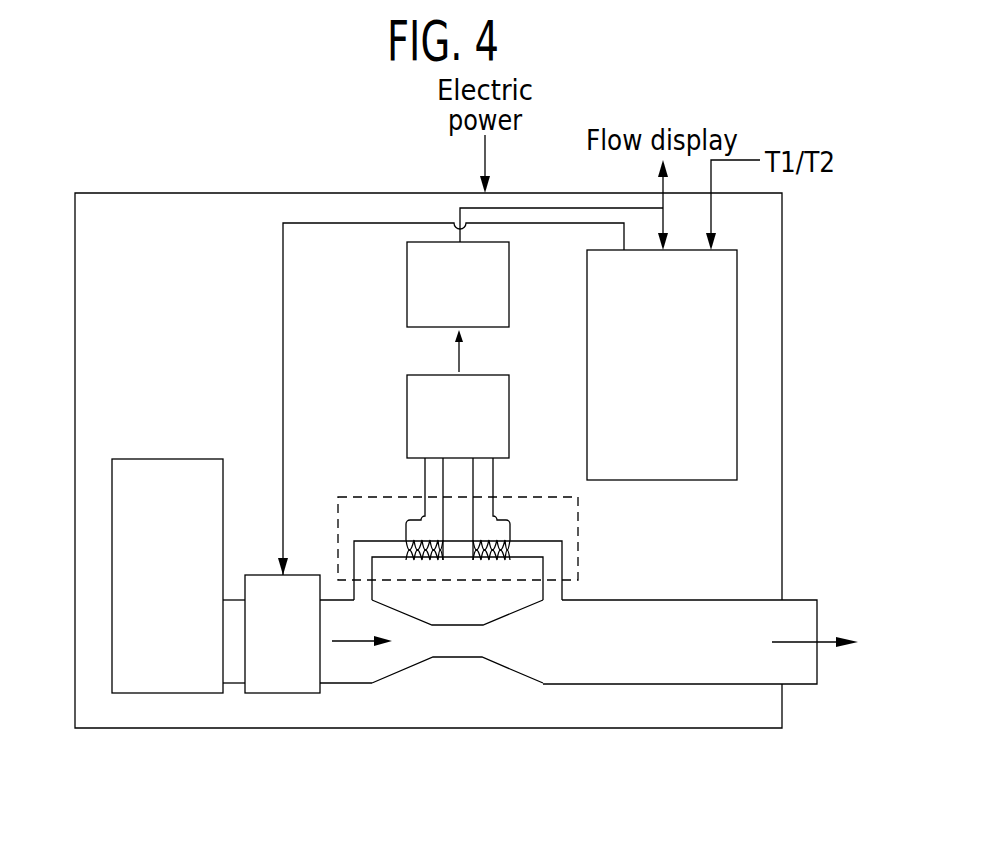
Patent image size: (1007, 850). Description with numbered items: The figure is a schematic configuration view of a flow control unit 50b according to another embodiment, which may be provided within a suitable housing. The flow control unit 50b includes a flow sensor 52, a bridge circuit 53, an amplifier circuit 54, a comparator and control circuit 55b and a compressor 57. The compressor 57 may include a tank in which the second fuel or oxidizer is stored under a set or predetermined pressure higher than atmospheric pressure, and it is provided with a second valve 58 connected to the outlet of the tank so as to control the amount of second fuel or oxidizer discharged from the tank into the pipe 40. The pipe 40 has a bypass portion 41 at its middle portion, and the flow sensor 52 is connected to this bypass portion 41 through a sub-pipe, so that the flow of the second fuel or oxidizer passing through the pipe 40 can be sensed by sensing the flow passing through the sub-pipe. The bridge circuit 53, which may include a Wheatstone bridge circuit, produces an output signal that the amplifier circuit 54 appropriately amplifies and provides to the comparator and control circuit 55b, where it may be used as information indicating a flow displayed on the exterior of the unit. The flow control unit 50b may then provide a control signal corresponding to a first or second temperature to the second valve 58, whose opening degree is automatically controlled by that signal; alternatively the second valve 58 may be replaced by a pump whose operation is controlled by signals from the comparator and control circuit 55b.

The flow control unit 50b is at (356, 122).
The amplifier circuit 54 is at (407, 284).
The bridge circuit 53 is at (407, 413).
The comparator and control circuit 55b is at (737, 363).
The flow sensor 52 is at (578, 535).
The compressor 57 is at (167, 693).
The second valve 58 is at (282, 693).
The pipe 40 is at (585, 684).
The bypass portion 41 is at (460, 650).